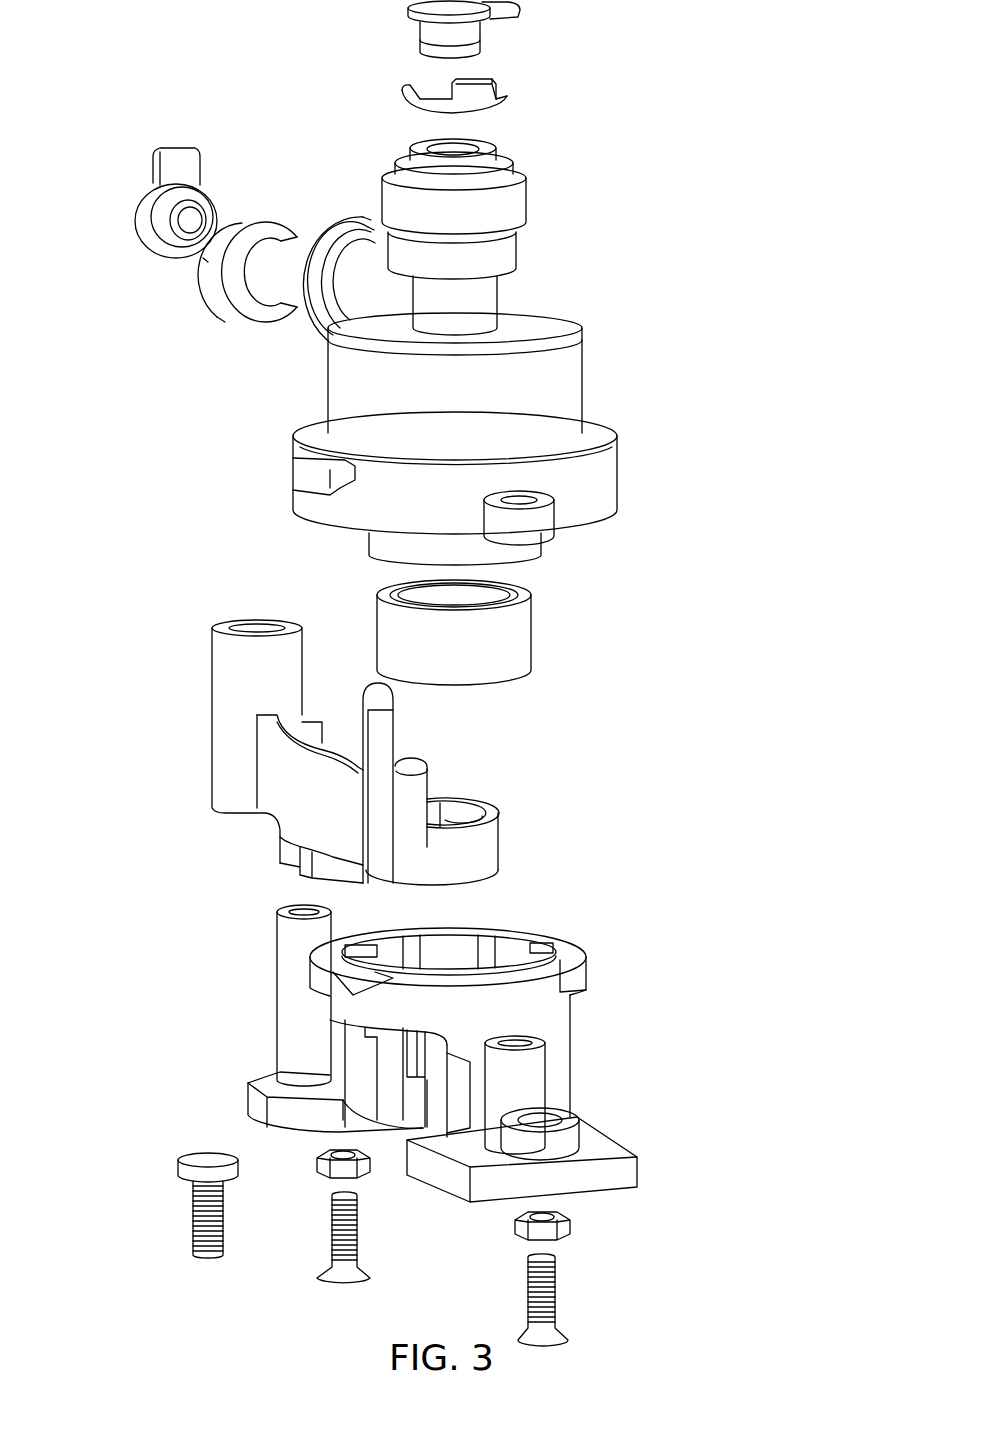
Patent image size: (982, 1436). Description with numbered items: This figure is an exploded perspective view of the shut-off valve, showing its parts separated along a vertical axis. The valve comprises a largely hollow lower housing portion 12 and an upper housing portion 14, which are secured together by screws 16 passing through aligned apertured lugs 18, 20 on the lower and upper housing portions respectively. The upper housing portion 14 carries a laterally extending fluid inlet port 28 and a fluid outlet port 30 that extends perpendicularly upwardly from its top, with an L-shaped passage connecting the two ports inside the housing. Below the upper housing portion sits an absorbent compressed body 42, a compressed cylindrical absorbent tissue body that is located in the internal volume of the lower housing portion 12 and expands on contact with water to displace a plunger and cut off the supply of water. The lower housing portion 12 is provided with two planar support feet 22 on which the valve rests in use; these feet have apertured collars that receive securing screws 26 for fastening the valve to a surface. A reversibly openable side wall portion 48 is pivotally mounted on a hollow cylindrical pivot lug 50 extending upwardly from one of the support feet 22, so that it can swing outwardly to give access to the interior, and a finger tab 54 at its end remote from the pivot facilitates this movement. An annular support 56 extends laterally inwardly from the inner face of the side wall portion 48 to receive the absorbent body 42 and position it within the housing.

The lower housing portion 12 is at (633, 1011).
The upper housing portion 14 is at (668, 397).
The screws 16 is at (193, 1213).
The apertured lug 18 is at (527, 1075).
The apertured lug 20 is at (537, 530).
The support feet 22 is at (595, 1143).
The securing screws 26 is at (518, 1330).
The fluid inlet port 28 is at (350, 243).
The fluid outlet port 30 is at (510, 205).
The absorbent compressed body 42 is at (517, 656).
The side wall portion 48 is at (207, 843).
The pivot lug 50 is at (292, 1013).
The finger tab 54 is at (378, 728).
The annular support 56 is at (488, 836).